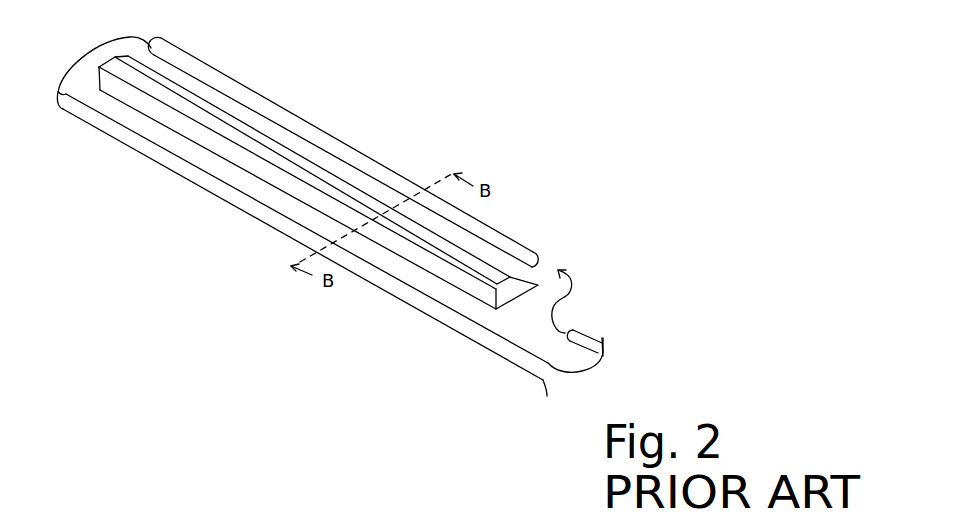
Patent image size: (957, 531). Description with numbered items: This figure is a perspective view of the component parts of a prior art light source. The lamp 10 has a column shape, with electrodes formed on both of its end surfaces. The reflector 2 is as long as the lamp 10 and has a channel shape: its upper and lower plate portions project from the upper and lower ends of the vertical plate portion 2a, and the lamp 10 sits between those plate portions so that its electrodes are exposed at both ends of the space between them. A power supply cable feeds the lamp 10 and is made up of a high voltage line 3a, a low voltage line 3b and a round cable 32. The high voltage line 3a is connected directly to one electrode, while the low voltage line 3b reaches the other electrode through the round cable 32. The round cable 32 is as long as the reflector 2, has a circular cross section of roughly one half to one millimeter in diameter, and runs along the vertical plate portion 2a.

The reflector 2 is at (252, 164).
The vertical plate portion 2a is at (280, 187).
The lamp 10 is at (310, 130).
The round cable 32 is at (447, 315).
The high voltage line 3a is at (578, 332).
The low voltage line 3b is at (523, 366).